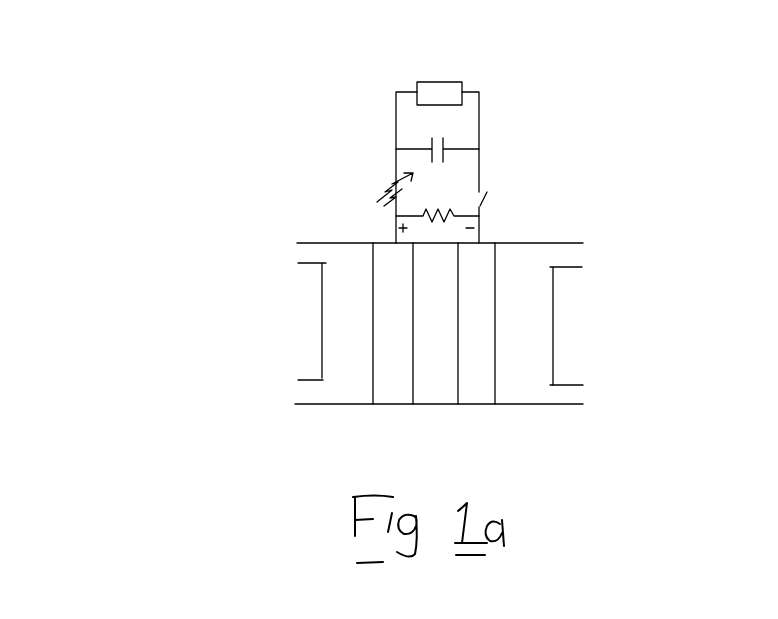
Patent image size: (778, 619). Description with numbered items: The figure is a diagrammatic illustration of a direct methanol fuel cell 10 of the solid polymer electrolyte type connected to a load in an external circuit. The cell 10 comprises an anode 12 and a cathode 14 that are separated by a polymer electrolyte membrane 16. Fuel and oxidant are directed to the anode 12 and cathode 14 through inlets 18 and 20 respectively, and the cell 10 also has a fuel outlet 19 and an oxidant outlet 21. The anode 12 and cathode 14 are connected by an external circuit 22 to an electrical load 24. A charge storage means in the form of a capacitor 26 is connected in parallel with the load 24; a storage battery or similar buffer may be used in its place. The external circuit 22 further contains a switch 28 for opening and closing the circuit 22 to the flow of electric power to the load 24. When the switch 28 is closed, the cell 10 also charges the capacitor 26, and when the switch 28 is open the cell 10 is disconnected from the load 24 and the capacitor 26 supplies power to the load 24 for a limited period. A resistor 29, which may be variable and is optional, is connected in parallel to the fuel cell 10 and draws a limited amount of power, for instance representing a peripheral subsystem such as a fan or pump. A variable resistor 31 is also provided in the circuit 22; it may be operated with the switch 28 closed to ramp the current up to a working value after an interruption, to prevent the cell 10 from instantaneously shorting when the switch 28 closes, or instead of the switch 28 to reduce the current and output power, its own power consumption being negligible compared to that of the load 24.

The direct methanol fuel cell 10 is at (203, 263).
The anode 12 is at (490, 243).
The cathode 14 is at (388, 258).
The polymer electrolyte membrane 16 is at (427, 395).
The inlet 18 is at (580, 254).
The fuel outlet 19 is at (582, 398).
The inlet 20 is at (298, 253).
The oxidant outlet 21 is at (290, 392).
The external circuit 22 is at (435, 122).
The electrical load 24 is at (415, 64).
The capacitor 26 is at (430, 143).
The switch 28 is at (490, 199).
The resistor 29 is at (460, 198).
The variable resistor 31 is at (375, 182).